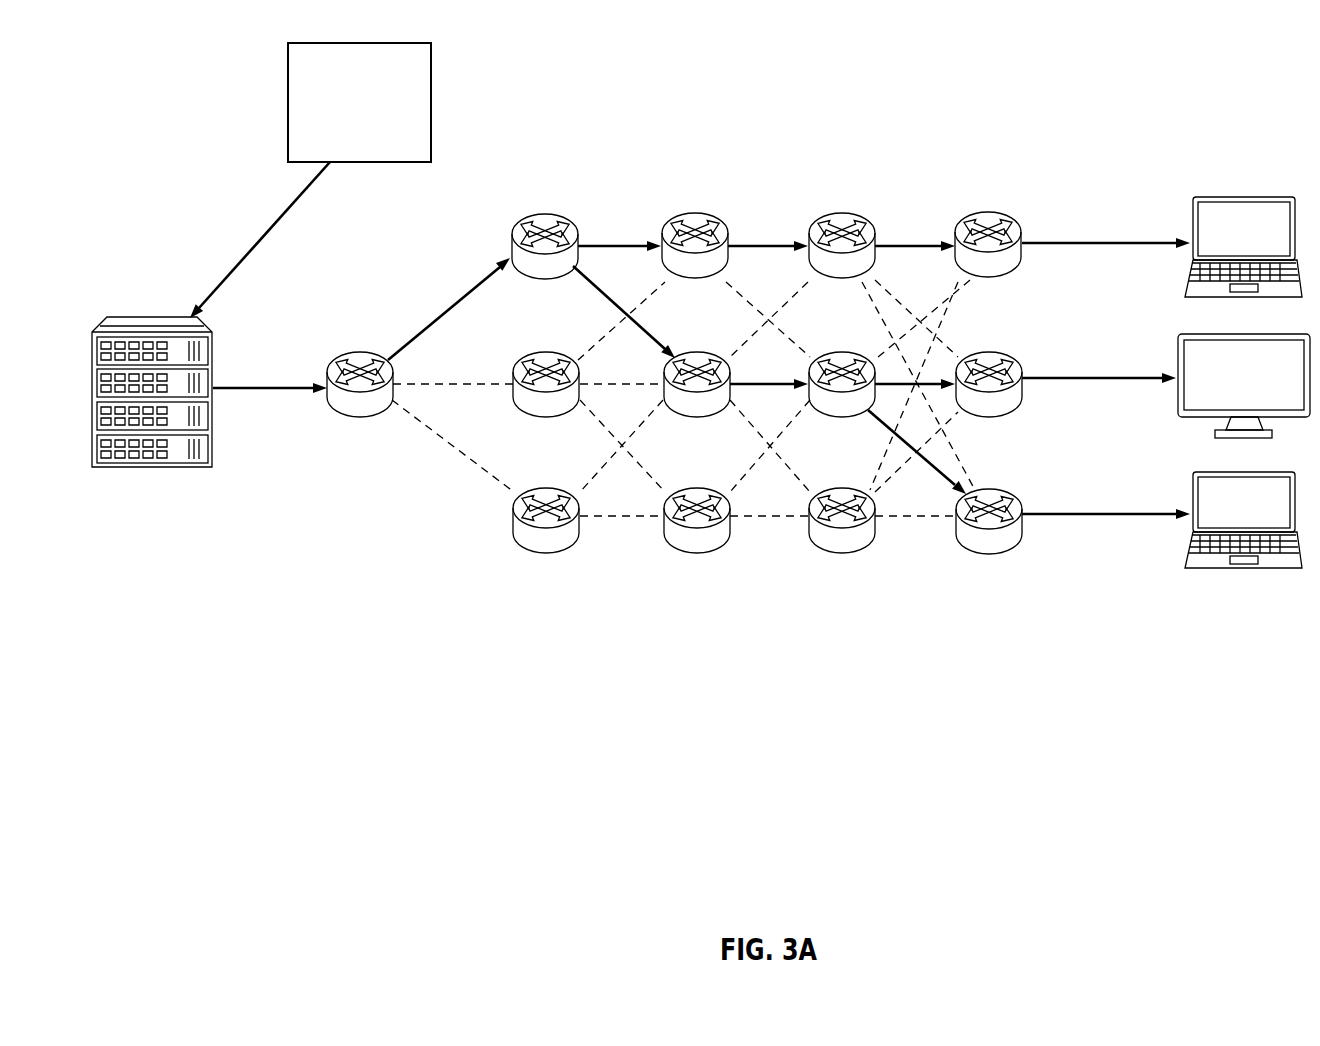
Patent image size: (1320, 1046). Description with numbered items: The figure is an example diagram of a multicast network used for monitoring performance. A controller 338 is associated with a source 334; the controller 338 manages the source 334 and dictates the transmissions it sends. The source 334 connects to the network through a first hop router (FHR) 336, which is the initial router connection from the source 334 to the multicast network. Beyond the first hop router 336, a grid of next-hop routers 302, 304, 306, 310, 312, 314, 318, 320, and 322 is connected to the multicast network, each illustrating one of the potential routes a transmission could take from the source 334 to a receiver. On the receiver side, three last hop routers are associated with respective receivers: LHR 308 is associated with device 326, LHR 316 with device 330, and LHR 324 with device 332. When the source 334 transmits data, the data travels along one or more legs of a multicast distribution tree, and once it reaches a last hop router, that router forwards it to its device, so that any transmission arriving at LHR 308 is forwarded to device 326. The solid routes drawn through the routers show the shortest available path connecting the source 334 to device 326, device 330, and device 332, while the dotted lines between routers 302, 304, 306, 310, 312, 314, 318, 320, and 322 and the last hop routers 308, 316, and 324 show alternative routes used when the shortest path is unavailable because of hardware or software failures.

The router 302 is at (562, 321).
The router 304 is at (712, 321).
The router 306 is at (859, 321).
The last hop router (LHR) 308 is at (1022, 262).
The router 310 is at (563, 458).
The router 312 is at (714, 458).
The router 314 is at (859, 458).
The last hop router (LHR) 316 is at (1022, 402).
The router 318 is at (563, 595).
The router 320 is at (714, 595).
The router 322 is at (859, 595).
The last hop router (LHR) 324 is at (1022, 539).
The device 326 is at (1295, 181).
The device 330 is at (1295, 391).
The device 332 is at (1295, 613).
The source 334 is at (208, 507).
The first hop router (FHR) 336 is at (398, 460).
The controller 338 is at (377, 133).